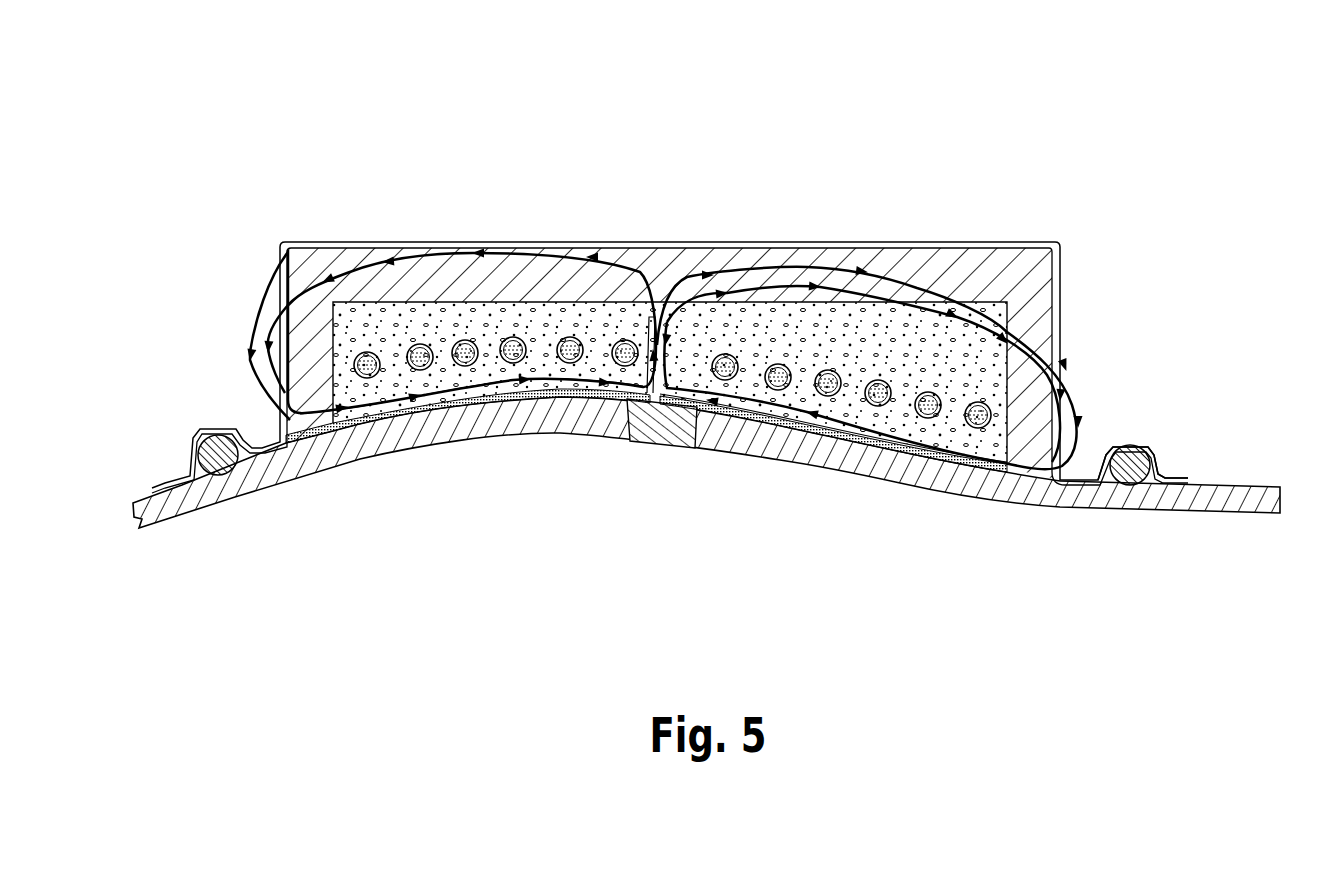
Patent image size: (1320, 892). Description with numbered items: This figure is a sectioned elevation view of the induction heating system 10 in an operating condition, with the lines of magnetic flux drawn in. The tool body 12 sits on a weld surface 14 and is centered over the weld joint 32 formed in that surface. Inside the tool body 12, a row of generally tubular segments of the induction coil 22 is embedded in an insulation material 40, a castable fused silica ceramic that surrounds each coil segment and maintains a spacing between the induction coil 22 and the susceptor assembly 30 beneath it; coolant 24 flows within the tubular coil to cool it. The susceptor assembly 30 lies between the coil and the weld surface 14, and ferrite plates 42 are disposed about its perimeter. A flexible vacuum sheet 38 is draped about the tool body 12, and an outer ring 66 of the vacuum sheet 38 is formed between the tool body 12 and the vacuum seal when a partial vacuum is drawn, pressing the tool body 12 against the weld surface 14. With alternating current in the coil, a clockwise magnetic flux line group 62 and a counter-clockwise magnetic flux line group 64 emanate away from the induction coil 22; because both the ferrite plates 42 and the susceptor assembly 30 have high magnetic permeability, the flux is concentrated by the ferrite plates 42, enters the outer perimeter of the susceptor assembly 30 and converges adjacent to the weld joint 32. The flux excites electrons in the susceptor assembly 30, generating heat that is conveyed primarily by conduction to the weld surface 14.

The induction heating system 10 is at (706, 301).
The tool body 12 is at (977, 262).
The weld surface 14 is at (317, 463).
The induction coil 22 is at (928, 392).
The coolant 24 is at (878, 380).
The susceptor assembly 30 is at (525, 378).
The weld joint 32 is at (653, 447).
The vacuum sheet 38 is at (1062, 290).
The insulation material 40 is at (735, 322).
The ferrite plates 42 is at (377, 423).
The clockwise magnetic flux line group 62 is at (1073, 358).
The counter-clockwise magnetic flux line group 64 is at (278, 323).
The outer ring 66 is at (1080, 477).